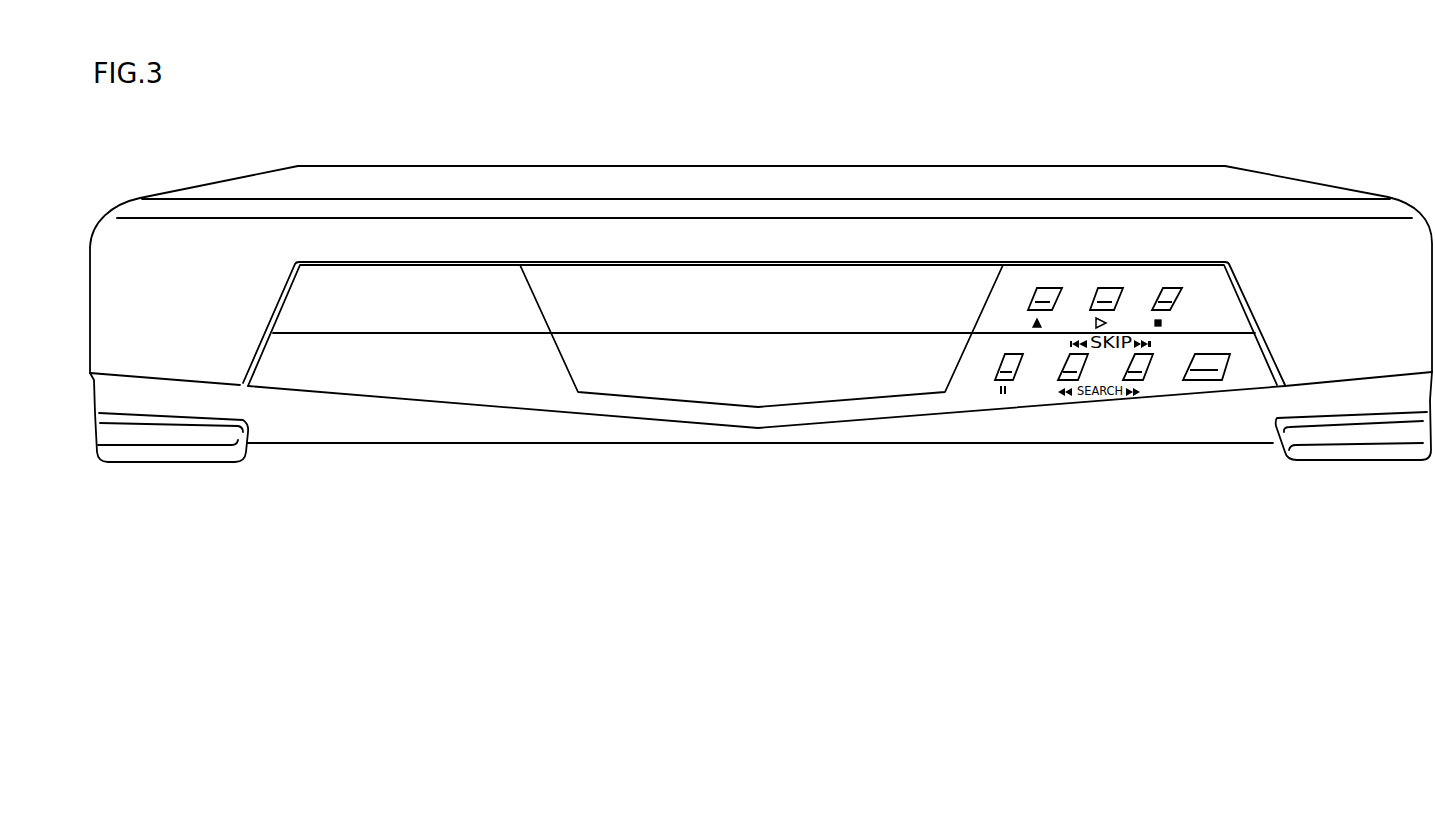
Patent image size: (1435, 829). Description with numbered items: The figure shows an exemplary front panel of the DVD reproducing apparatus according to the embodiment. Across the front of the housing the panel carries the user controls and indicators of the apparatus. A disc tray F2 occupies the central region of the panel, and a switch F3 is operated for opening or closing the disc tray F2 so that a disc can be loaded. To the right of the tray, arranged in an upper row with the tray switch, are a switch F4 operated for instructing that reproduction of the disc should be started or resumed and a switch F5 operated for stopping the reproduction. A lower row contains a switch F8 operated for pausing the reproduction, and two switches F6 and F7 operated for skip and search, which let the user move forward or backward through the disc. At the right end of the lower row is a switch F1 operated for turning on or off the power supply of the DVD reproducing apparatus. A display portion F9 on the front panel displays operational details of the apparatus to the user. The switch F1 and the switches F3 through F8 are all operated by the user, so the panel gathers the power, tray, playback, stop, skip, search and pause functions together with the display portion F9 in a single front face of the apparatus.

The switch F1 is at (1200, 380).
The disc tray F2 is at (758, 287).
The switch F3 is at (1060, 298).
The switch F4 is at (1123, 298).
The switch F5 is at (1178, 295).
The switch F6 is at (1150, 363).
The switch F7 is at (1065, 361).
The switch F8 is at (1000, 361).
The display portion F9 is at (762, 378).